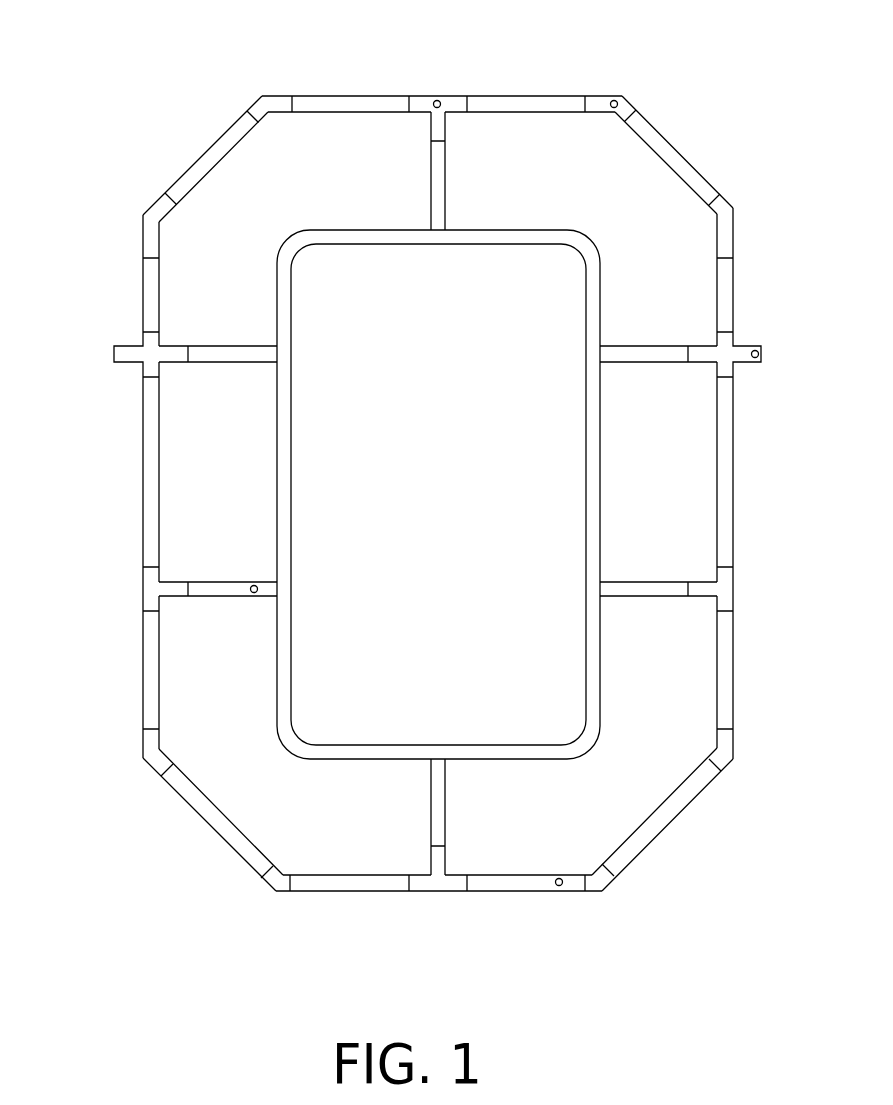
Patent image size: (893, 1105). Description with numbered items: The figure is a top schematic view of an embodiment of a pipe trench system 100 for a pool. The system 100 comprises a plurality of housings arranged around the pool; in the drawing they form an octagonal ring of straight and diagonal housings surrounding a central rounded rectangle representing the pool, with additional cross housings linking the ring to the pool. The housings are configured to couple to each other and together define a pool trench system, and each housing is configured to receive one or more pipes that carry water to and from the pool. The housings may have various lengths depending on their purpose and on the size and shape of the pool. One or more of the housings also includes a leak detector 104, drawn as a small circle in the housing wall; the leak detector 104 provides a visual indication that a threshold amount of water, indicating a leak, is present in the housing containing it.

The pipe trench system 100 is at (158, 42).
The leak detector 104 is at (435, 101).